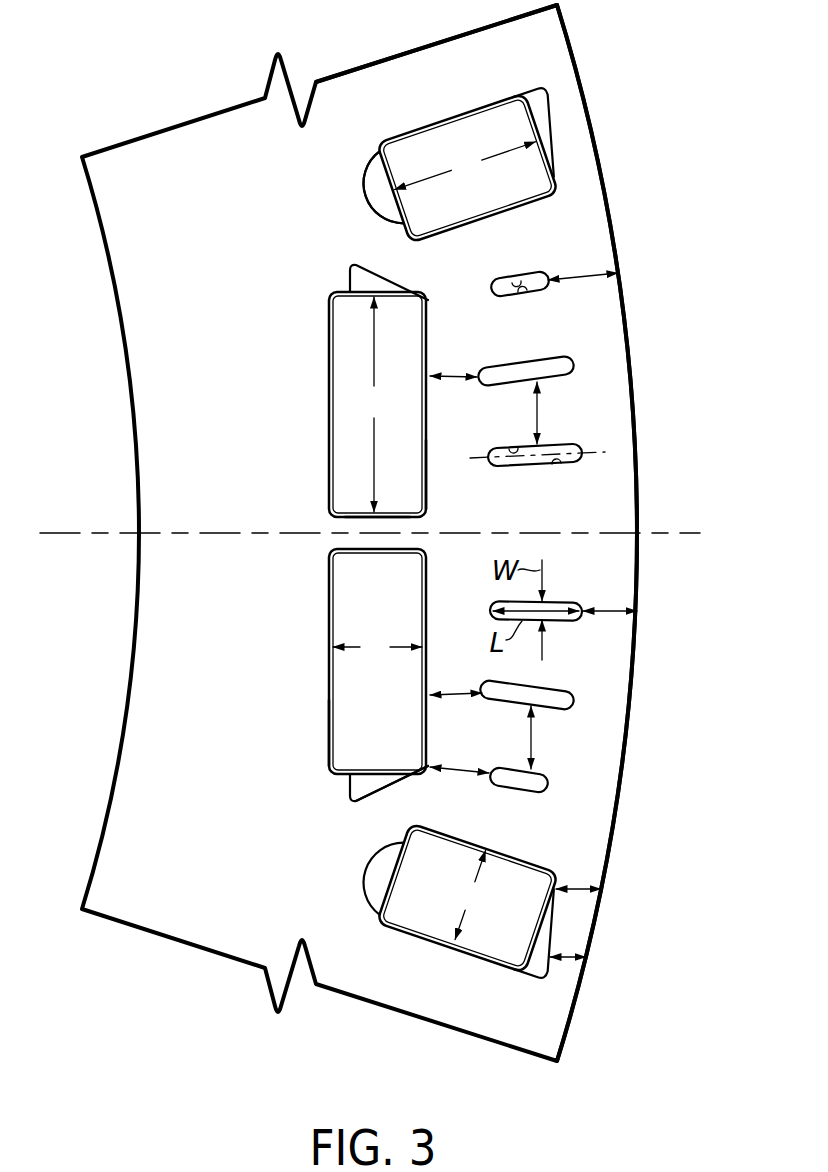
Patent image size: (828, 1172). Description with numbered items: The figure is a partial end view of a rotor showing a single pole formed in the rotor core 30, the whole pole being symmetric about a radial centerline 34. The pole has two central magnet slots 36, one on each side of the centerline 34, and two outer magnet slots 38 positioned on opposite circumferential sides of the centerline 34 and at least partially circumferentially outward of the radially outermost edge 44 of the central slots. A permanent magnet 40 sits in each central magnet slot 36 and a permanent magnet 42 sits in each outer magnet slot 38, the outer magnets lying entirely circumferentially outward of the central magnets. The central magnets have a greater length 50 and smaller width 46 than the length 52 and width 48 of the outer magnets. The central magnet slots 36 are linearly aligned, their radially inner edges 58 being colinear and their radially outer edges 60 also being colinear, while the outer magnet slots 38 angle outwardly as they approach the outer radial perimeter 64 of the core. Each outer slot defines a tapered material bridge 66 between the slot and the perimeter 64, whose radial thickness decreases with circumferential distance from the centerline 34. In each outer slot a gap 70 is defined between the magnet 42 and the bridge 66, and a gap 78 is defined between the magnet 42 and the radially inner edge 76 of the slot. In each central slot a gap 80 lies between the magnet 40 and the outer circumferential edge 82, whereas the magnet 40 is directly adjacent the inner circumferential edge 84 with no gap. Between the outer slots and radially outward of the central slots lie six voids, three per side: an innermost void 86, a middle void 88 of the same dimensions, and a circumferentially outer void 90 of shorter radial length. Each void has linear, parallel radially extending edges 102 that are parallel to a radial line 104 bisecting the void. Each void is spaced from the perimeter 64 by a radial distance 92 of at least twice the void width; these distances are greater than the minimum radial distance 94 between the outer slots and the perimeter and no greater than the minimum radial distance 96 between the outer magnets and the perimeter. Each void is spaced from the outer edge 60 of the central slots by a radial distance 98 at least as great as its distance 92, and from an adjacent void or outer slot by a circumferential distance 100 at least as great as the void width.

The rotor core 30 is at (145, 165).
The radial centerline 34 is at (652, 532).
The central magnet slot 36 is at (330, 438).
The outer magnet slot 38 is at (455, 115).
The permanent magnet 40 is at (345, 356).
The permanent magnet 42 is at (499, 118).
The radially outermost edge 44 is at (428, 299).
The width 46 is at (377, 647).
The width 48 is at (470, 895).
The length 50 is at (374, 404).
The length 52 is at (465, 166).
The radially inner edge 58 is at (330, 734).
The radially outer edge 60 is at (428, 479).
The outer radial perimeter 64 is at (584, 84).
The material bridge 66 is at (580, 133).
The gap 70 is at (539, 110).
The radially inner edge 76 is at (363, 199).
The gap 78 is at (390, 213).
The gap 80 is at (362, 789).
The outer circumferential edge 82 is at (368, 805).
The inner circumferential edge 84 is at (388, 517).
The void 86 is at (565, 448).
The void 88 is at (556, 362).
The void 90 is at (500, 279).
The radial distance 92 is at (586, 278).
The minimum radial distance 94 is at (572, 955).
The minimum radial distance 96 is at (578, 886).
The radial distance 98 is at (463, 374).
The circumferential distance 100 is at (540, 412).
The radially extending edge 102 is at (516, 282).
The radial line 104 is at (485, 456).